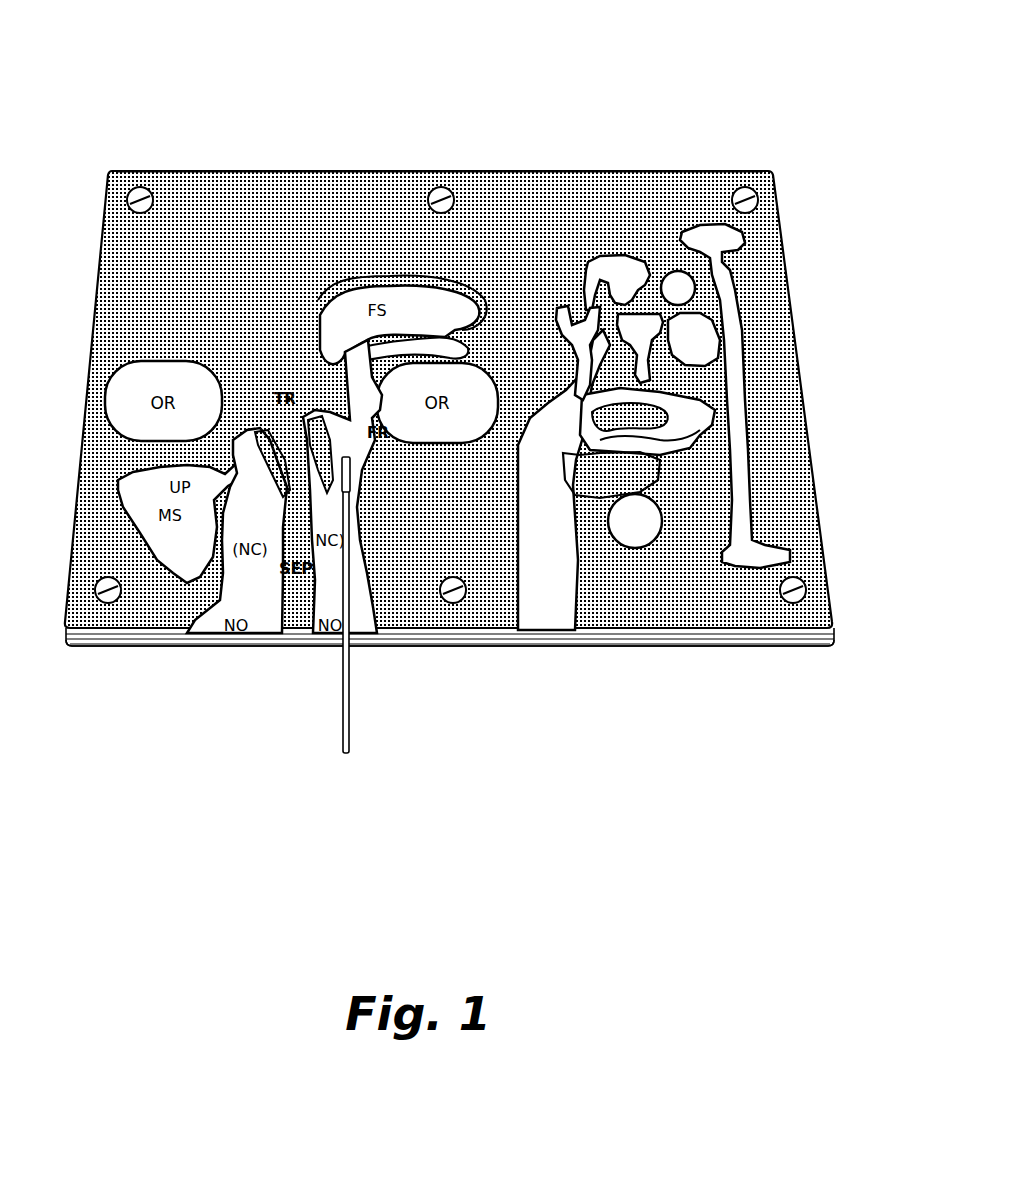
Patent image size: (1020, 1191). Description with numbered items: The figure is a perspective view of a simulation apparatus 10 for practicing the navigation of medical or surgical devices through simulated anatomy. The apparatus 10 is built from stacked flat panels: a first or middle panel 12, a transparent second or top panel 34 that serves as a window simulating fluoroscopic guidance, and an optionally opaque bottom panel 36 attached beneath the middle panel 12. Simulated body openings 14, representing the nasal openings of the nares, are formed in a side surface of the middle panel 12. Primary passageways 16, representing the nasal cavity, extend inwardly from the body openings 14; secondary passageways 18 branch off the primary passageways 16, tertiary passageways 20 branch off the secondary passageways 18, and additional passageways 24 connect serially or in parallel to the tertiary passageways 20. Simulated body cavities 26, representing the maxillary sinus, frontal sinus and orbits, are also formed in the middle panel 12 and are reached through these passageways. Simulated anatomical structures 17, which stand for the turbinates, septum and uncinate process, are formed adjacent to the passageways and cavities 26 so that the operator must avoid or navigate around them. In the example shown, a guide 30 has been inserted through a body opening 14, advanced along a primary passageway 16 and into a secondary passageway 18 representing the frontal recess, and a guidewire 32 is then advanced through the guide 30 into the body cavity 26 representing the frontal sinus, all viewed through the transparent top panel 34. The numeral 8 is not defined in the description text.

The instrument tip 8 is at (349, 742).
The apparatus 10 is at (695, 112).
The first or middle panel 12 is at (622, 636).
The simulated body openings 14 is at (240, 640).
The primary passageways 16 is at (364, 481).
The simulated anatomical structures 17 is at (233, 455).
The secondary passageways 18 is at (305, 428).
The tertiary passageways 20 is at (338, 410).
The additional passageways 24 is at (592, 440).
The simulated body cavities 26 is at (372, 270).
The guide 30 is at (348, 760).
The guidewire 32 is at (445, 340).
The transparent second or top panel 34 is at (545, 640).
The bottom panel 36 is at (742, 640).